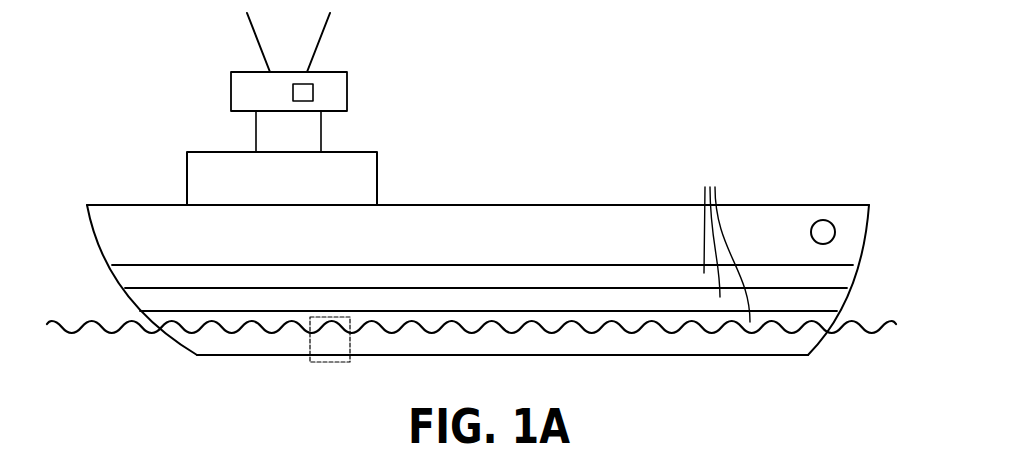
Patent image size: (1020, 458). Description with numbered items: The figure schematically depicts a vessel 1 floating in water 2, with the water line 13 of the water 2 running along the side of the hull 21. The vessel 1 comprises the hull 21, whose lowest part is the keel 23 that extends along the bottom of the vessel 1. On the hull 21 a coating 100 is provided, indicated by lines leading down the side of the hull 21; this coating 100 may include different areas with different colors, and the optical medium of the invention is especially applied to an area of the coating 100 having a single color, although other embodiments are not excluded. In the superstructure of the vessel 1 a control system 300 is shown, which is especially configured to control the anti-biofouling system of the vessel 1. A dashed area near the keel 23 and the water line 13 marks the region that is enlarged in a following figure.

The vessel 1 is at (840, 119).
The water 2 is at (878, 355).
The water line 13 is at (87, 330).
The hull 21 is at (106, 213).
The keel 23 is at (655, 357).
The coating 100 is at (721, 241).
The control system 300 is at (313, 96).